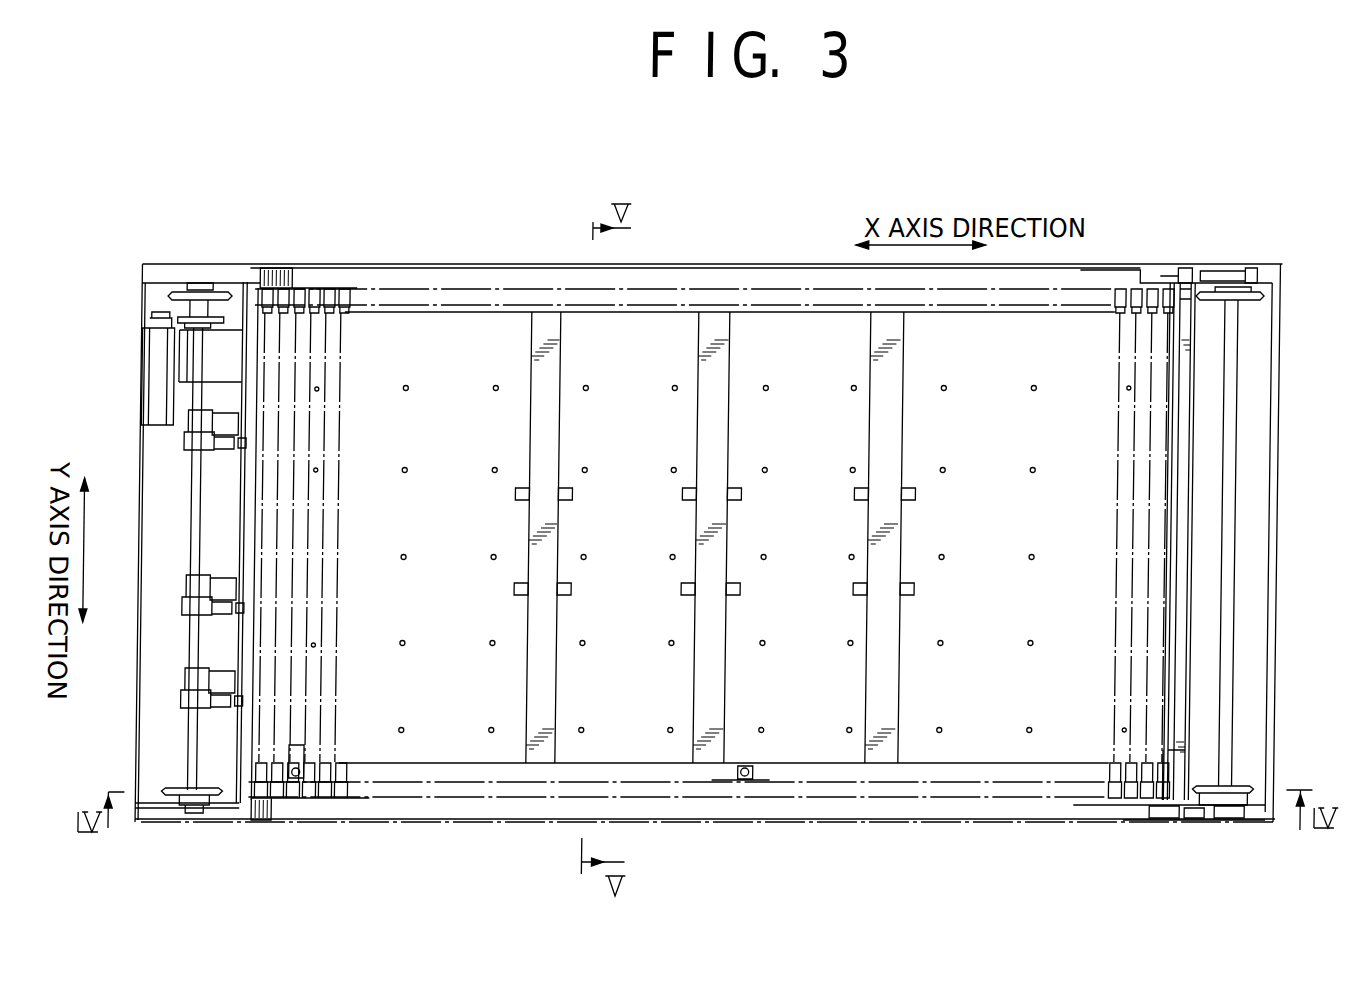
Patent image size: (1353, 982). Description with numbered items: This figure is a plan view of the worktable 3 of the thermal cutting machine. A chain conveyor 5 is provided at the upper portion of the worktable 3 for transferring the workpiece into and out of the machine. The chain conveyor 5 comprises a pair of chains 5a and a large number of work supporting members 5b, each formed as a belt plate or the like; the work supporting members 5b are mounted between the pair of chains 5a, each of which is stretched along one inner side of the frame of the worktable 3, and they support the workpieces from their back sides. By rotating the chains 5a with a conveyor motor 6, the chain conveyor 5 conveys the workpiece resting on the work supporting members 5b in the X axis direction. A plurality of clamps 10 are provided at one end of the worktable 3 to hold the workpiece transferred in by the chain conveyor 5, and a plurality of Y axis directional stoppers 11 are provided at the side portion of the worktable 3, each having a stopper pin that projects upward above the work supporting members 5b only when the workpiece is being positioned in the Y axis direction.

The worktable 3 is at (660, 266).
The chain conveyor 5 is at (765, 288).
The chains 5a is at (470, 298).
The work supporting members 5b is at (330, 300).
The conveyor motor 6 is at (152, 338).
The clamps 10 is at (208, 672).
The Y axis directional stoppers 11 is at (303, 780).